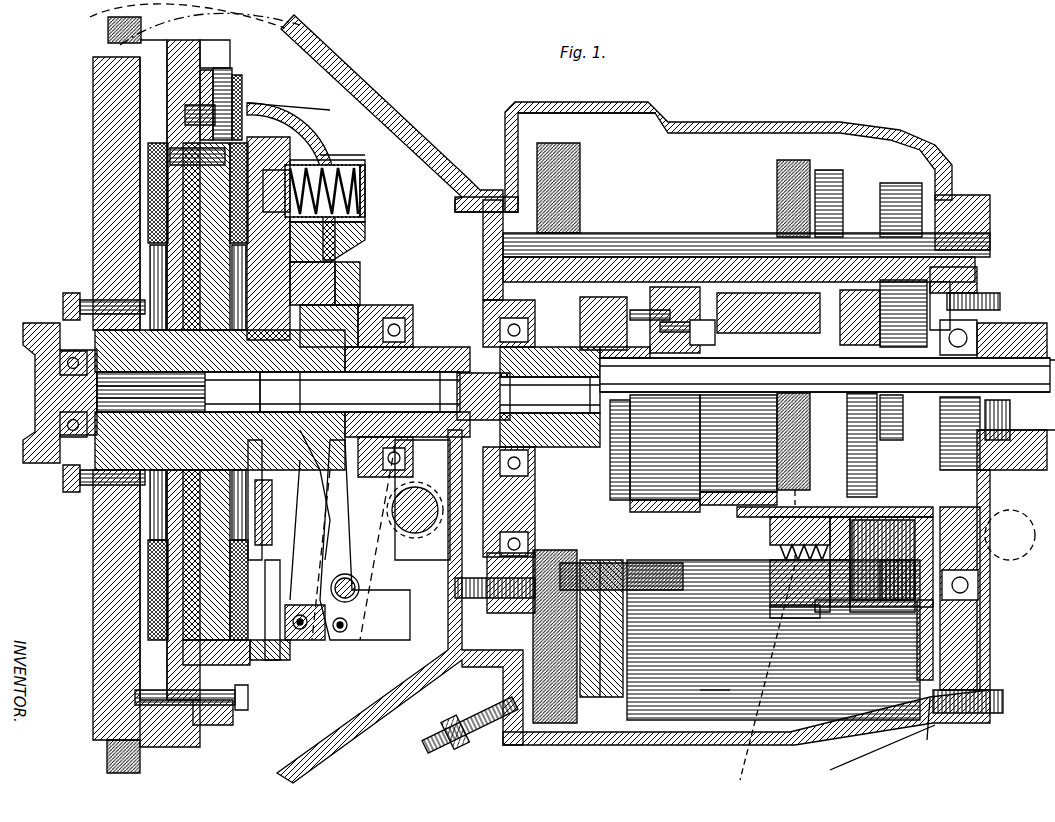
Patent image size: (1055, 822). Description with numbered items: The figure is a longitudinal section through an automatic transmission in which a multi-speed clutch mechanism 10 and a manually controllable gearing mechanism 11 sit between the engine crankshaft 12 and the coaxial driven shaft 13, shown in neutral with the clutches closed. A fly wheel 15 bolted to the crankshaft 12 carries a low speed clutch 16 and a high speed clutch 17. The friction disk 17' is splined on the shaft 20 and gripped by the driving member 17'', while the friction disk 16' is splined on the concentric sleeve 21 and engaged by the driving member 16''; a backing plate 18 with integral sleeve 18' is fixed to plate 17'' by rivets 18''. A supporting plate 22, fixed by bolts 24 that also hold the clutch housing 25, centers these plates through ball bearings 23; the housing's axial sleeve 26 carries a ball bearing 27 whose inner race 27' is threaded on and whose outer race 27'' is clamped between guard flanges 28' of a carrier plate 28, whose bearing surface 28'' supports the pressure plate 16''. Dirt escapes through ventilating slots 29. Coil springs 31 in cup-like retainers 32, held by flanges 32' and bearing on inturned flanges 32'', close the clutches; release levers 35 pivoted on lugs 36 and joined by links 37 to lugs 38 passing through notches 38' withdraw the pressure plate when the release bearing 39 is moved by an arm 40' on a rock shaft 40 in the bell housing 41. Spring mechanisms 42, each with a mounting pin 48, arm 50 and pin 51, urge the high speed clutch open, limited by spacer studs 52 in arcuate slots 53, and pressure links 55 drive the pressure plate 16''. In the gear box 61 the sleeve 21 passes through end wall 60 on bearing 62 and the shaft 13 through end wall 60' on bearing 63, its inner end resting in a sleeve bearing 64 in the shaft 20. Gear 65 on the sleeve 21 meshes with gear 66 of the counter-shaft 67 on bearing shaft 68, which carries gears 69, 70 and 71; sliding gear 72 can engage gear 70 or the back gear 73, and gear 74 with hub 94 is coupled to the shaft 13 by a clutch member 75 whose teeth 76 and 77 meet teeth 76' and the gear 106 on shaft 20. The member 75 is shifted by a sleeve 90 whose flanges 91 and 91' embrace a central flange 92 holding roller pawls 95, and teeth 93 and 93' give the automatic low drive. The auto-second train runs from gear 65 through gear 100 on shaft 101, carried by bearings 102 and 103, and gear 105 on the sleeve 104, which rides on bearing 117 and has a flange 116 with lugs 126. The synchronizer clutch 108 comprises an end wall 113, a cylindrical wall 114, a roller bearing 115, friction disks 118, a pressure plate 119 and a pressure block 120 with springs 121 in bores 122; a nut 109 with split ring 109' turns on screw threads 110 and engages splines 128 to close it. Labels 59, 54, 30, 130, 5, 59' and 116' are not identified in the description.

The adjusting link 59 is at (181, 24).
The driving or engine crankshaft 12 is at (17, 327).
The fly wheel 15 is at (100, 588).
The radial ventilating slots 29 is at (110, 82).
The concentric sleeve 21 is at (330, 352).
The shaft 20 is at (400, 345).
The backing plate 18 is at (255, 474).
The rivets 18'' is at (168, 385).
The axial sleeve 18' is at (280, 392).
The ball bearings 23 is at (150, 520).
The supporting plate 22 is at (170, 540).
The high speed clutch 17 is at (150, 414).
The friction disk 17' is at (106, 435).
The disk-like driving member 17'' is at (146, 444).
The low speed clutch 16 is at (232, 421).
The friction disk 16' is at (253, 667).
The low speed clutch driving member 16'' is at (283, 675).
The pressure bars or links 55 is at (248, 697).
The bolts 24 is at (215, 725).
The spacer studs 52 is at (185, 142).
The arcuate slots 53 is at (195, 172).
The integral arm 50 is at (218, 70).
The pin 51 is at (248, 75).
The spring mechanisms 42 is at (246, 68).
The retainer 54 is at (238, 30).
The mounting pin 48 is at (250, 108).
The expansive coil springs 31 is at (360, 200).
The cup-like retainers 32 is at (332, 182).
The flanges 32' is at (346, 140).
The inturned flanges 32'' is at (382, 191).
The spring seat 30 is at (300, 110).
The ball bearing 27 is at (379, 365).
The inner race 27' is at (363, 283).
The outer race 27'' is at (345, 270).
The integral axial sleeve 26 is at (330, 320).
The release bearing 39 is at (398, 318).
The bearing 62 is at (490, 305).
The multi-speed clutch mechanism 10 is at (323, 63).
The bell housing 41 is at (430, 168).
The bearing 102 is at (455, 668).
The drain plug 130 is at (445, 712).
The clutch release levers 35 is at (352, 560).
The lugs 36 is at (360, 580).
The lugs 38 is at (310, 645).
The peripheral notches 38' is at (365, 610).
The links 37 is at (330, 640).
The clutch housing 25 is at (290, 650).
The carrier plate 28 is at (322, 495).
The guard flanges 28' is at (319, 529).
The annular bearing surface 28'' is at (310, 512).
The transverse rock shaft 40 is at (430, 510).
The arm 40' is at (433, 500).
The bearing 117 is at (490, 540).
The sleeve bearing 64 is at (550, 397).
The selective speed-change gearing mechanism 11 is at (782, 112).
The gear box 61 is at (700, 120).
The end wall 60 is at (486, 187).
The bearing shaft 68 is at (985, 215).
The cluster-gear shaft or sleeve 67 is at (634, 183).
The gear 65 is at (575, 265).
The gear 66 is at (570, 260).
The gear 69 is at (778, 162).
The gear 70 is at (830, 172).
The gear 71 is at (895, 185).
The grooved outer sleeve 90 is at (690, 300).
The clutch teeth 93 is at (690, 282).
The gear 74 is at (765, 292).
The annular flange 91 is at (649, 304).
The central flange 92 is at (660, 327).
The annular flange 91' is at (702, 332).
The clutch teeth 93' is at (941, 305).
The back gear 73 is at (925, 300).
The gear 72 is at (858, 312).
The end wall 60' is at (976, 282).
The bearing 63 is at (980, 330).
The driven shaft 13 is at (1010, 400).
The hub 94 is at (825, 375).
The roller type pawls 95 is at (690, 358).
The clutch teeth 76 is at (736, 431).
The clutch member 75 is at (690, 395).
The clutch teeth 76' is at (770, 441).
The clutch teeth 77 is at (700, 462).
The lugs 126 is at (720, 470).
The gear 106 is at (664, 512).
The integral flange 116 is at (732, 508).
The roller bearing 115 is at (758, 508).
The section line 5 is at (795, 503).
The pressure plate 119 is at (828, 517).
The cylindrical side wall 114 is at (900, 515).
The end wall 113 is at (935, 520).
The bearing 103 is at (985, 568).
The clutch means 108 is at (810, 740).
The bolt 59' is at (882, 734).
The gear 100 is at (555, 723).
The gear 105 is at (605, 697).
The screw threads 110 is at (780, 640).
The longitudinal splines 128 is at (680, 598).
The nut 109 is at (560, 607).
The expansive split ring 109' is at (506, 584).
The concentric shaft or sleeve 104 is at (650, 640).
The shaft 101 is at (890, 600).
The friction disks 118 is at (878, 612).
The pressure block 120 is at (790, 650).
The expansive coil springs 121 is at (835, 612).
The bores 122 is at (830, 620).
The gear 116' is at (697, 663).